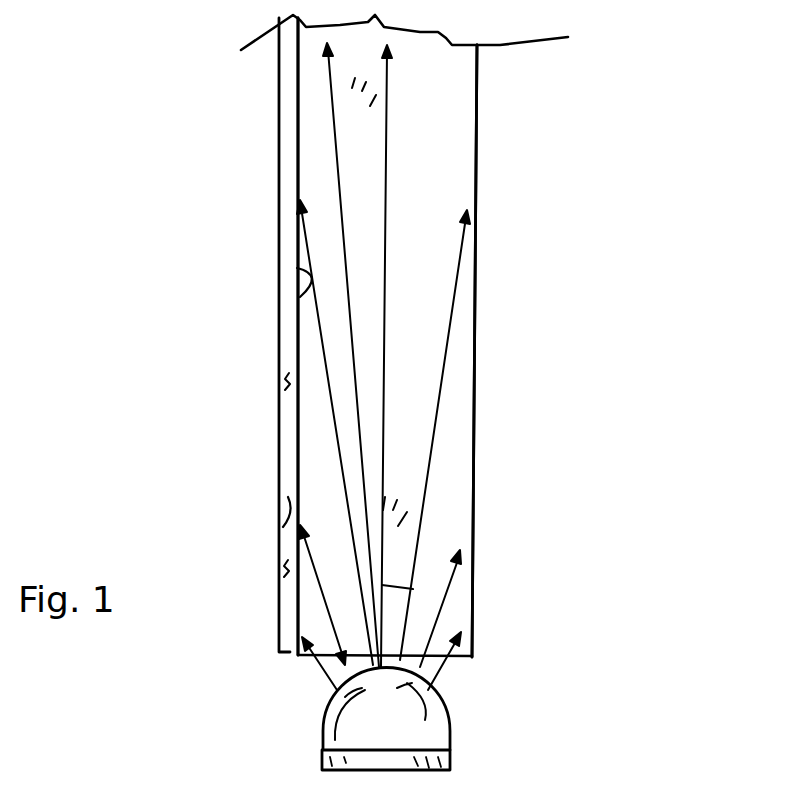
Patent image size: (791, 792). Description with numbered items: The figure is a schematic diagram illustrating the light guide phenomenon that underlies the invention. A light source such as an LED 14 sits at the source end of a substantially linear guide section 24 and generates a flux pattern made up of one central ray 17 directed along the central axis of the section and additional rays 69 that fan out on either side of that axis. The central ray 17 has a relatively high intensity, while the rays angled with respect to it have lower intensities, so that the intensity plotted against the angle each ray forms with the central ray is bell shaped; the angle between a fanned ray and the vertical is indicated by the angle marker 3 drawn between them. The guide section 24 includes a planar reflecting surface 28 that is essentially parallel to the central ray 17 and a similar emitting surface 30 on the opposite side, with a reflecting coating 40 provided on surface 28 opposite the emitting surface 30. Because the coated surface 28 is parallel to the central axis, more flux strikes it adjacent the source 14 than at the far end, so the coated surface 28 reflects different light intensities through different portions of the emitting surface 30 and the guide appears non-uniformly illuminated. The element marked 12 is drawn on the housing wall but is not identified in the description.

The central ray 17 is at (390, 148).
The linear guide section 24 is at (515, 196).
The housing 12 is at (435, 230).
The additional rays 69 is at (358, 352).
The emitting surface 30 is at (474, 440).
The angle 3 is at (430, 600).
The LED 14 is at (430, 728).
The planar reflecting surface 28 is at (300, 292).
The reflecting coating 40 is at (282, 523).